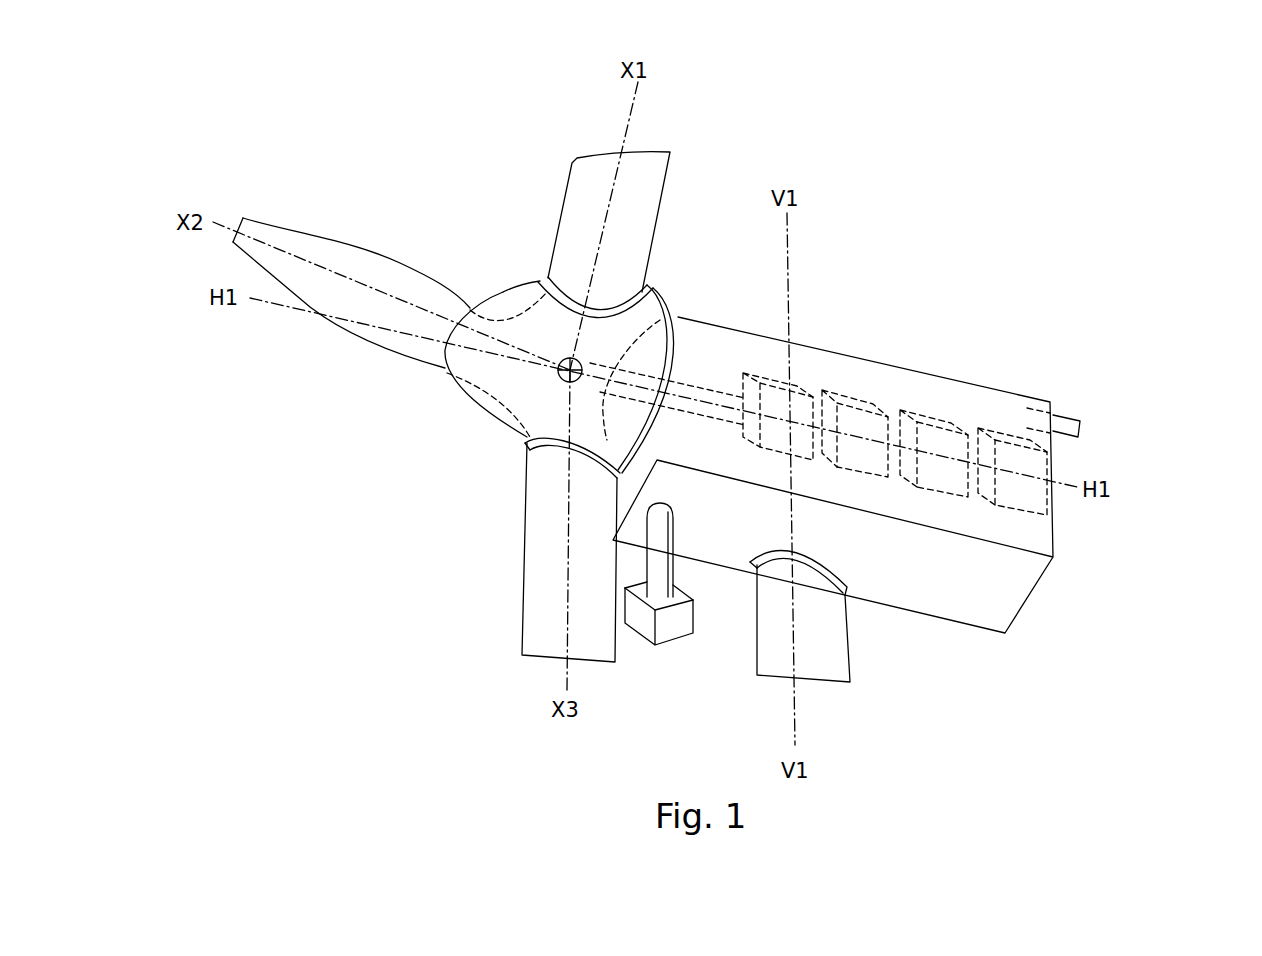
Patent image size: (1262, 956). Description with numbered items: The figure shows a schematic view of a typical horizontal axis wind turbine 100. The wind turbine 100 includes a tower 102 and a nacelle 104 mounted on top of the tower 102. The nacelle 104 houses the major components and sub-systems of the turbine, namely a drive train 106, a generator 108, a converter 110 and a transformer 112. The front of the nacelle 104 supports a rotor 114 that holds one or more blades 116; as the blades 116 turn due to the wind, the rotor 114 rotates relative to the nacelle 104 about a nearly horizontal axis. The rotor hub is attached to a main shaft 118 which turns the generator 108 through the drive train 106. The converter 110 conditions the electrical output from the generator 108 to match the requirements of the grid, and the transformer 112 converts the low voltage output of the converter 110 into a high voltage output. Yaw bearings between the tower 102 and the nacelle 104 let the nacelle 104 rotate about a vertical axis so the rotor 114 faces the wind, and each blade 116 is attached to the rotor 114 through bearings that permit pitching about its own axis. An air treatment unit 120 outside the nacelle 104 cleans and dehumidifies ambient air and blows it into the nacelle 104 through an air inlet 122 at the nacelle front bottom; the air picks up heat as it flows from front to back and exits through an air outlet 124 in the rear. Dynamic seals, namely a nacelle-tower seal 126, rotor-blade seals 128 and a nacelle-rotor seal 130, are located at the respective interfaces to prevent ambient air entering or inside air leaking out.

The horizontal axis wind turbine 100 is at (957, 222).
The tower 102 is at (847, 666).
The nacelle 104 is at (1017, 588).
The drive train 106 is at (797, 376).
The generator 108 is at (845, 400).
The converter 110 is at (918, 417).
The transformer 112 is at (1003, 418).
The rotor 114 is at (505, 289).
The blades 116 is at (362, 337).
The main shaft 118 is at (709, 387).
The air treatment unit 120 is at (675, 642).
The air inlet 122 is at (665, 508).
The air outlet 124 is at (1082, 428).
The nacelle-tower seal 126 is at (851, 588).
The rotor-blade seals 128 is at (541, 446).
The nacelle-rotor seal 130 is at (665, 289).